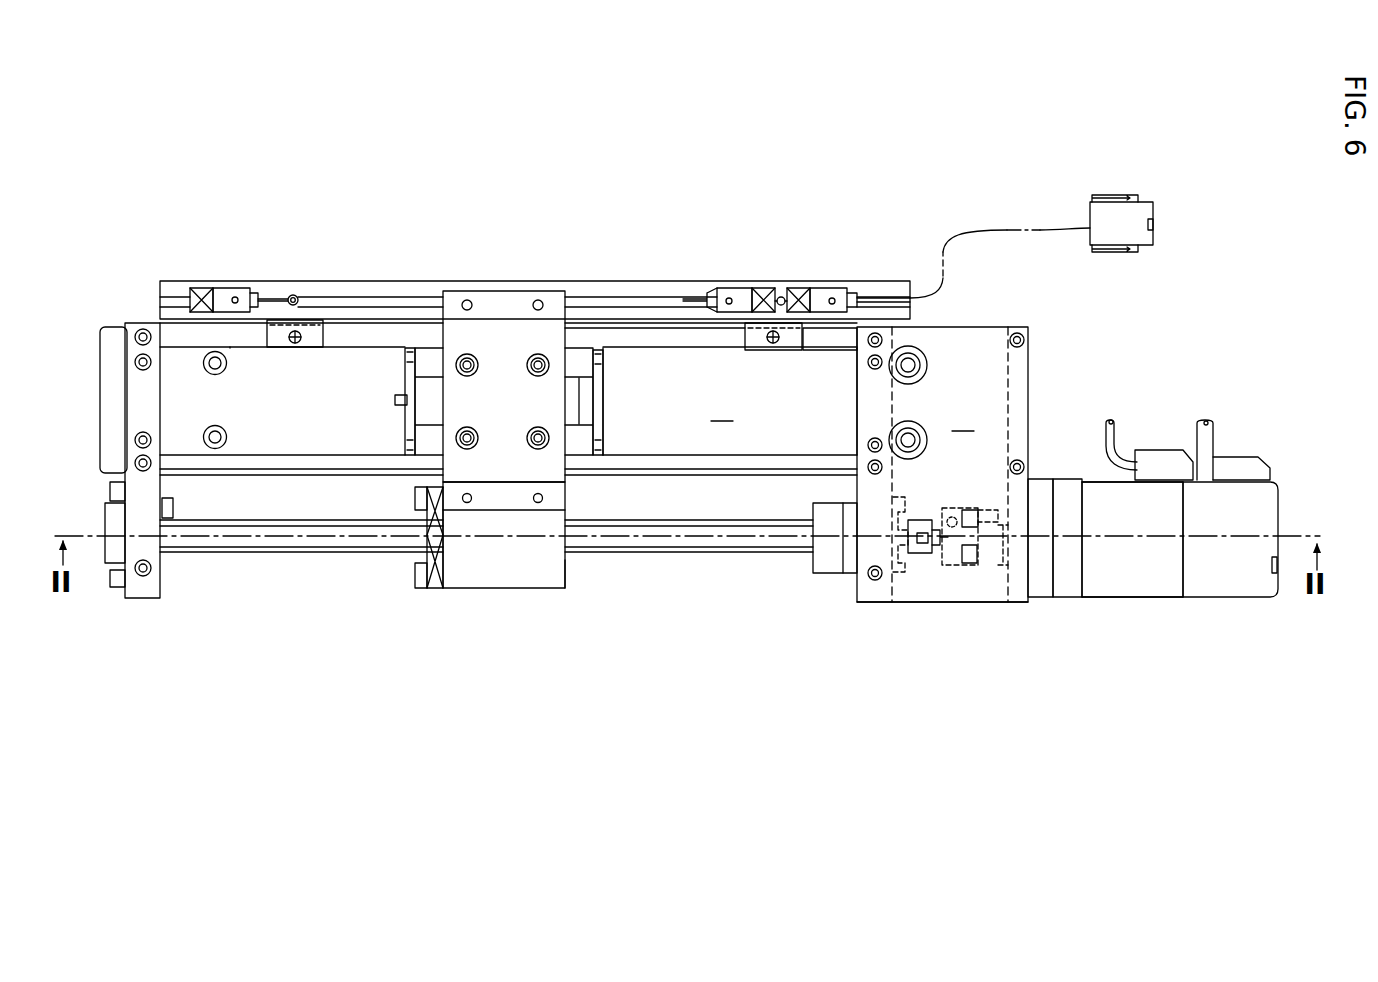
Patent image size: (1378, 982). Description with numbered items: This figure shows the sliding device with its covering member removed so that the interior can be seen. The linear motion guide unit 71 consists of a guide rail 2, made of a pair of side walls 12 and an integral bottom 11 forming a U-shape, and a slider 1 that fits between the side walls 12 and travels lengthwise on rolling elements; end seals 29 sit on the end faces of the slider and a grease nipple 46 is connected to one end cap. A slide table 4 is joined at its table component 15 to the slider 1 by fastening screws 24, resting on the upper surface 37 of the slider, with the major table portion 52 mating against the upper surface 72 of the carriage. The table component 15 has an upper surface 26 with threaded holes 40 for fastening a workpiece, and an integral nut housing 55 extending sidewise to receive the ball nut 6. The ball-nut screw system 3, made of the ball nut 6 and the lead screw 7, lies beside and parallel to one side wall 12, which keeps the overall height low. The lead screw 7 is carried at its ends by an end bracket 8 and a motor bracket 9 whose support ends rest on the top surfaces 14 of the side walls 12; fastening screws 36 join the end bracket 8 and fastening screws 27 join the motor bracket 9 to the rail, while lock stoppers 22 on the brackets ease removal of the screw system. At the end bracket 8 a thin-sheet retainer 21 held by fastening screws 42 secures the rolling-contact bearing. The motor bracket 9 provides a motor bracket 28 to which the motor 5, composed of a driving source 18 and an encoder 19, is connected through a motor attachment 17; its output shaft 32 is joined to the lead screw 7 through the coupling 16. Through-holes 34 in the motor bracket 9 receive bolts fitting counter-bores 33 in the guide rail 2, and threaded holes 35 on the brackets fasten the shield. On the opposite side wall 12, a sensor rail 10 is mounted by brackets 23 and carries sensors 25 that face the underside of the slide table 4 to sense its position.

The slider 1 is at (577, 360).
The guide rail 2 is at (667, 382).
The ball-nut screw system 3 is at (569, 571).
The slide table 4 is at (527, 302).
The motor 5 is at (1118, 578).
The ball nut 6 is at (460, 568).
The lead screw 7 is at (273, 540).
The end bracket 8 is at (145, 592).
The motor bracket 9 is at (942, 464).
The sensor rail 10 is at (382, 287).
The bottom 11 is at (689, 390).
The side wall 12 is at (697, 337).
The top surface 14 is at (840, 340).
The table component 15 is at (508, 340).
The coupling 16 is at (948, 568).
The motor attachment 17 is at (1040, 500).
The driving source 18 is at (1153, 580).
The encoder 19 is at (1228, 578).
The retainer 21 is at (112, 518).
The lock stopper 22 is at (168, 508).
The bracket 23 is at (313, 332).
The fastening screw 24 is at (463, 440).
The sensor 25 is at (203, 288).
The upper surface 26 is at (497, 503).
The fastening screw 27 is at (877, 334).
The motor bracket 28 is at (972, 590).
The end seal 29 is at (407, 370).
The output shaft 32 is at (1010, 565).
The counter-bore 33 is at (207, 360).
The through-hole 34 is at (930, 362).
The threaded hole 35 is at (137, 360).
The fastening screw 36 is at (140, 337).
The upper surface 37 is at (582, 442).
The threaded hole 40 is at (540, 503).
The fastening screw 42 is at (115, 587).
The grease nipple 46 is at (395, 402).
The major table portion 52 is at (535, 340).
The nut housing 55 is at (520, 570).
The linear motion guide unit 71 is at (277, 380).
The upper surface 72 is at (425, 362).